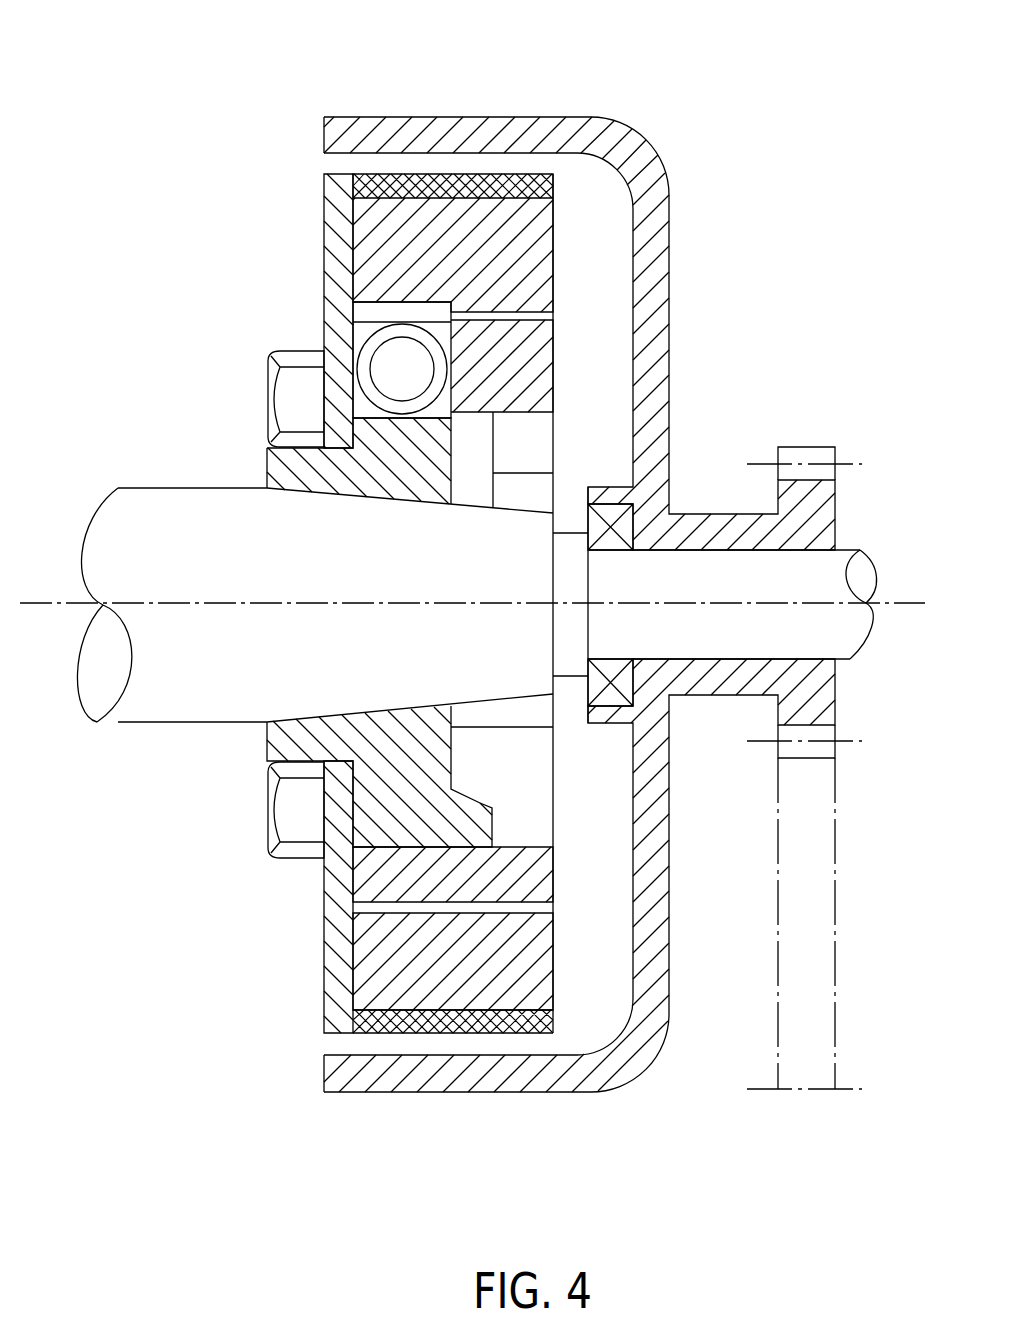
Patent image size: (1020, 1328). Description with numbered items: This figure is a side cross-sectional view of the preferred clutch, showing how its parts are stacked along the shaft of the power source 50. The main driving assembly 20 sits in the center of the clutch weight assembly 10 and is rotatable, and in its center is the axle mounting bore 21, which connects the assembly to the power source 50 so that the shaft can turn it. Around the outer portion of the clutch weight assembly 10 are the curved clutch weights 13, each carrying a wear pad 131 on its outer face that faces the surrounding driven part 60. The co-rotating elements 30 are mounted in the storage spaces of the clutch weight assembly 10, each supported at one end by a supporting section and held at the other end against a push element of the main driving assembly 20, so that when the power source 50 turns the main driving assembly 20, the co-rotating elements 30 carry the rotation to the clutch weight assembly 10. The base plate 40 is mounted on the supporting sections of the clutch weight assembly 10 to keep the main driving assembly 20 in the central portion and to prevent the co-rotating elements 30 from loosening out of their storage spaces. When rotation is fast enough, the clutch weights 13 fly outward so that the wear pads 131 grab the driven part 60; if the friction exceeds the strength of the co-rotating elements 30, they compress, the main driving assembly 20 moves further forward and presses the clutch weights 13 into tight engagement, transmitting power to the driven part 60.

The clutch weight assembly 10 is at (558, 303).
The clutch weight 13 is at (510, 207).
The wear pad 131 is at (453, 183).
The main driving assembly 20 is at (275, 745).
The axle mounting bore 21 is at (383, 708).
The co-rotating element 30 is at (370, 347).
The base plate 40 is at (330, 226).
The power source 50 is at (208, 712).
The driven part 60 is at (350, 133).